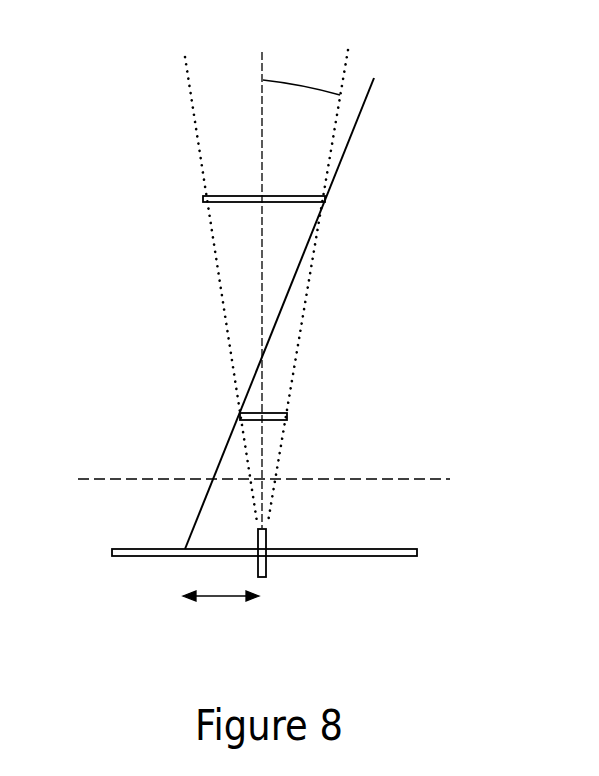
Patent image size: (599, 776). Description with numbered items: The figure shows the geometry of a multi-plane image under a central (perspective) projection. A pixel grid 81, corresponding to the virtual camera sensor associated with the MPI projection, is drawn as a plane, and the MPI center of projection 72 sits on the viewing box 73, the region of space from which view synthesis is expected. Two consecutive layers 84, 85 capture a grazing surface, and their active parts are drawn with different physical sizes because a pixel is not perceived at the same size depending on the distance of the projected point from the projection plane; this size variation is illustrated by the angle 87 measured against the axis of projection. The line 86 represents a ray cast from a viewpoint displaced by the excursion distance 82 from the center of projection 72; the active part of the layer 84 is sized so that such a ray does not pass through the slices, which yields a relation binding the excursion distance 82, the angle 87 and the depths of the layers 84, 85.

The MPI center of projection 72 is at (268, 558).
The viewing box 73 is at (417, 551).
The pixel grid 81 is at (427, 479).
The excursion distance 82 is at (217, 597).
The layer 84 is at (203, 199).
The layer 85 is at (287, 416).
The tilted optical axis 86 is at (355, 132).
The angle 87 is at (307, 82).